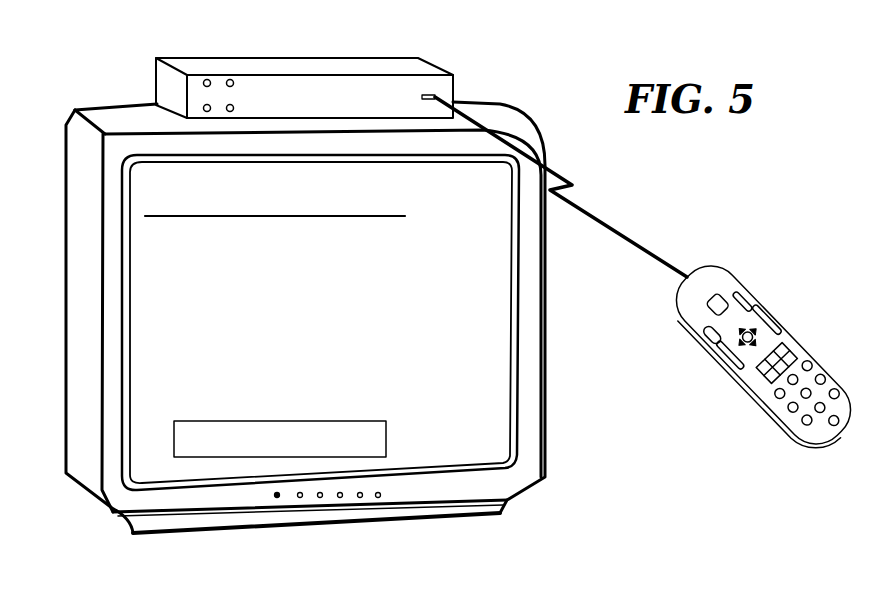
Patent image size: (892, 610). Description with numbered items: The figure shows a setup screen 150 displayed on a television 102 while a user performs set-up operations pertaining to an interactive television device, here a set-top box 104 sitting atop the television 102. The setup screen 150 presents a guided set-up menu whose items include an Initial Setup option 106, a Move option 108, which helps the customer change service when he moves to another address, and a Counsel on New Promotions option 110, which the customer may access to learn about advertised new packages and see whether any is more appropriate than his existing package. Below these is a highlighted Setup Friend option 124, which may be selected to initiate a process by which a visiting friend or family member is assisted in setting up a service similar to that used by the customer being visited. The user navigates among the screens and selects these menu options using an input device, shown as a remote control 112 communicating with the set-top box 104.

The television 102 is at (522, 468).
The set-top box 104 is at (445, 80).
The Initial Setup option 106 is at (368, 273).
The Move option 108 is at (275, 318).
The Counsel on New Promotions option 110 is at (445, 362).
The remote control 112 is at (797, 437).
The Setup Friend option 124 is at (388, 436).
The setup screen 150 is at (572, 388).